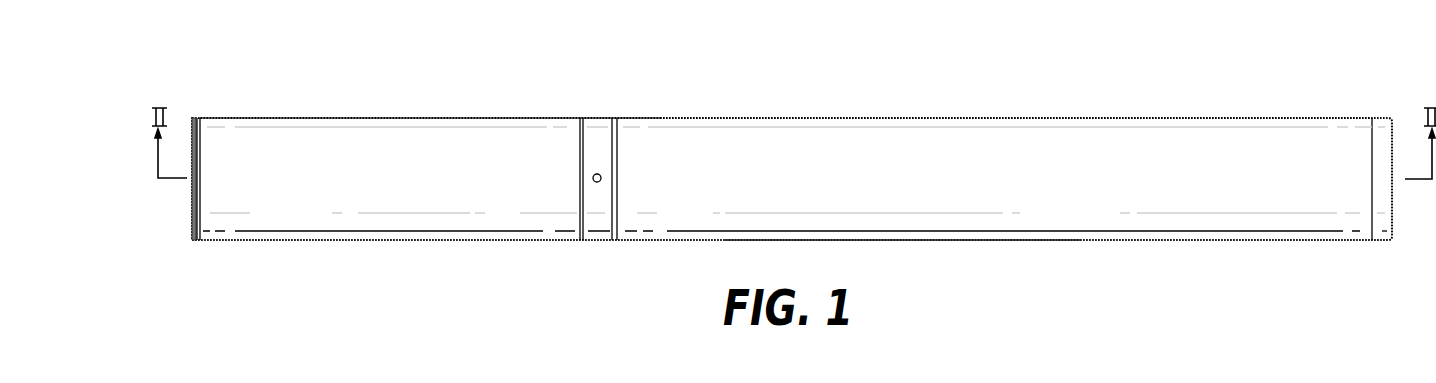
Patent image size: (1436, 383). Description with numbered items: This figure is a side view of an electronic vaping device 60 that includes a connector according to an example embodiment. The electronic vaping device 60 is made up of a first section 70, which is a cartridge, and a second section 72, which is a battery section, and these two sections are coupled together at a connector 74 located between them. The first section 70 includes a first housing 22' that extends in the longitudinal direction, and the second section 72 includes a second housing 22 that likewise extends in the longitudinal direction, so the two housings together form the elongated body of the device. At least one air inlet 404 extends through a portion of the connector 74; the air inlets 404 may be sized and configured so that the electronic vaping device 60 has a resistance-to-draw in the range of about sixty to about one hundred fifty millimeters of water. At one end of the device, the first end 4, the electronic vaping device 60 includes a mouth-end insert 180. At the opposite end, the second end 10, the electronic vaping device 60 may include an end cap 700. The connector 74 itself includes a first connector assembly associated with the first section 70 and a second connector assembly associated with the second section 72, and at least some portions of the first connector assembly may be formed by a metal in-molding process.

The first end 4 is at (194, 96).
The second end 10 is at (1376, 97).
The second housing 22 is at (1016, 105).
The first housing 22' is at (430, 104).
The electronic vaping device 60 is at (901, 80).
The first section 70 is at (374, 118).
The second section 72 is at (1037, 118).
The connector 74 is at (598, 119).
The mouth-end insert 180 is at (193, 240).
The air inlet 404 is at (597, 183).
The end cap 700 is at (1392, 240).